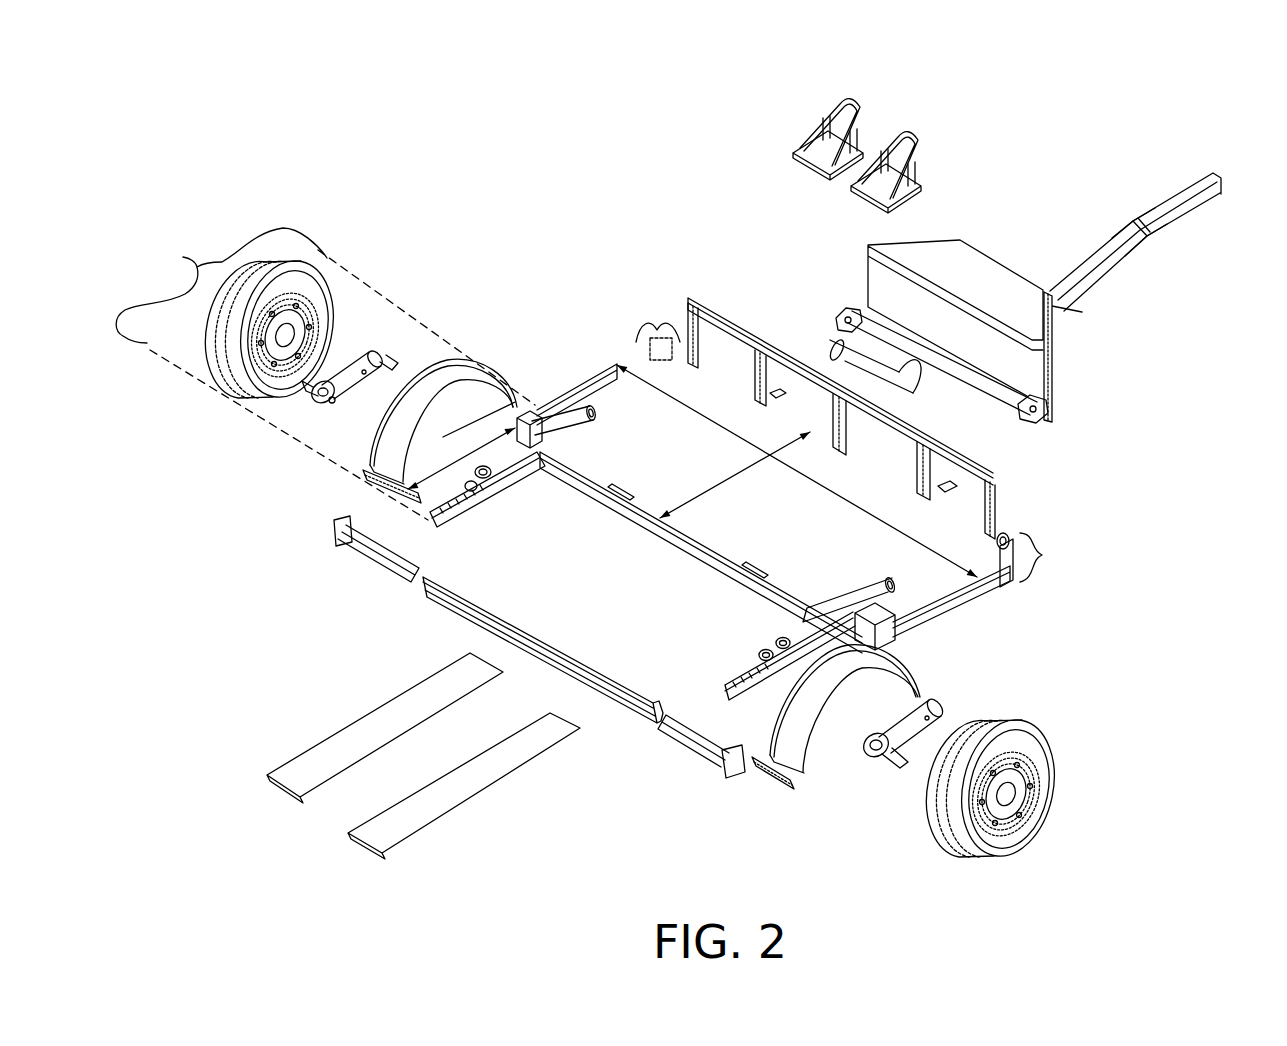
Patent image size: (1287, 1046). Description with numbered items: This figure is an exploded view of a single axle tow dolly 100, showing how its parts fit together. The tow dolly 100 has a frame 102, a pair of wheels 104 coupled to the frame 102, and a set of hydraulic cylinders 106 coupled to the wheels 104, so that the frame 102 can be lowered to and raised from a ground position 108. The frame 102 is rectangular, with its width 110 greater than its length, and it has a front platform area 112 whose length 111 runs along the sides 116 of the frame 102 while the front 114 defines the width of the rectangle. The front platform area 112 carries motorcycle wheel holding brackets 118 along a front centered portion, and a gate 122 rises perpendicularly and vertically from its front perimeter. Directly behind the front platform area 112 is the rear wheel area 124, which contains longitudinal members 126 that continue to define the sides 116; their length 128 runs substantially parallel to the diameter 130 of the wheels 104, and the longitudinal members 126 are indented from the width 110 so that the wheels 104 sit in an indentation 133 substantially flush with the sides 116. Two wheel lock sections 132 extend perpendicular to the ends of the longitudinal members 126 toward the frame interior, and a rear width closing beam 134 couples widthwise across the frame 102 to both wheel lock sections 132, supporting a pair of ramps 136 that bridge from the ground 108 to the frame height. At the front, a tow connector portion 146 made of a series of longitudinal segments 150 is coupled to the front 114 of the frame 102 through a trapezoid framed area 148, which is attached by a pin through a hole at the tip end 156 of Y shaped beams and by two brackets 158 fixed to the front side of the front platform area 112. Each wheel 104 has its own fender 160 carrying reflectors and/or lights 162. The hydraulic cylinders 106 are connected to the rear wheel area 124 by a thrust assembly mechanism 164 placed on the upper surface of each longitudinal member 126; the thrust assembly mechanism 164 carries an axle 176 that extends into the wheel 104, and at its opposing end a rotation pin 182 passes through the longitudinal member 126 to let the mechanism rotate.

The single axle tow dolly 100 is at (410, 138).
The frame 102 is at (677, 543).
The wheels 104 is at (308, 288).
The hydraulic cylinders 106 is at (557, 407).
The ground position 108 is at (1040, 901).
The width 110 is at (707, 420).
The length of the front platform area 111 is at (723, 484).
The front platform area 112 is at (770, 556).
The front 114 is at (883, 463).
The sides 116 is at (590, 368).
The motorcycle wheel holding brackets 118 is at (853, 97).
The gate 122 is at (722, 305).
The rear wheel area 124 is at (221, 285).
The longitudinal members 126 is at (350, 538).
The length 128 is at (478, 492).
The diameter 130 is at (443, 467).
The wheel lock sections 132 is at (400, 573).
The indentation 133 is at (533, 412).
The rear width closing beam 134 is at (425, 537).
The ramp 136 is at (350, 743).
The tow connector portion 146 is at (1128, 223).
The trapezoid framed area 148 is at (1072, 420).
The longitudinal segments 150 is at (1205, 176).
The tip end 156 is at (840, 311).
The brackets 158 is at (771, 395).
The fender 160 is at (467, 356).
The reflectors and/or lights 162 is at (875, 358).
The thrust assembly mechanism 164 is at (343, 373).
The axle 176 is at (277, 427).
The rotation pin 182 is at (343, 400).